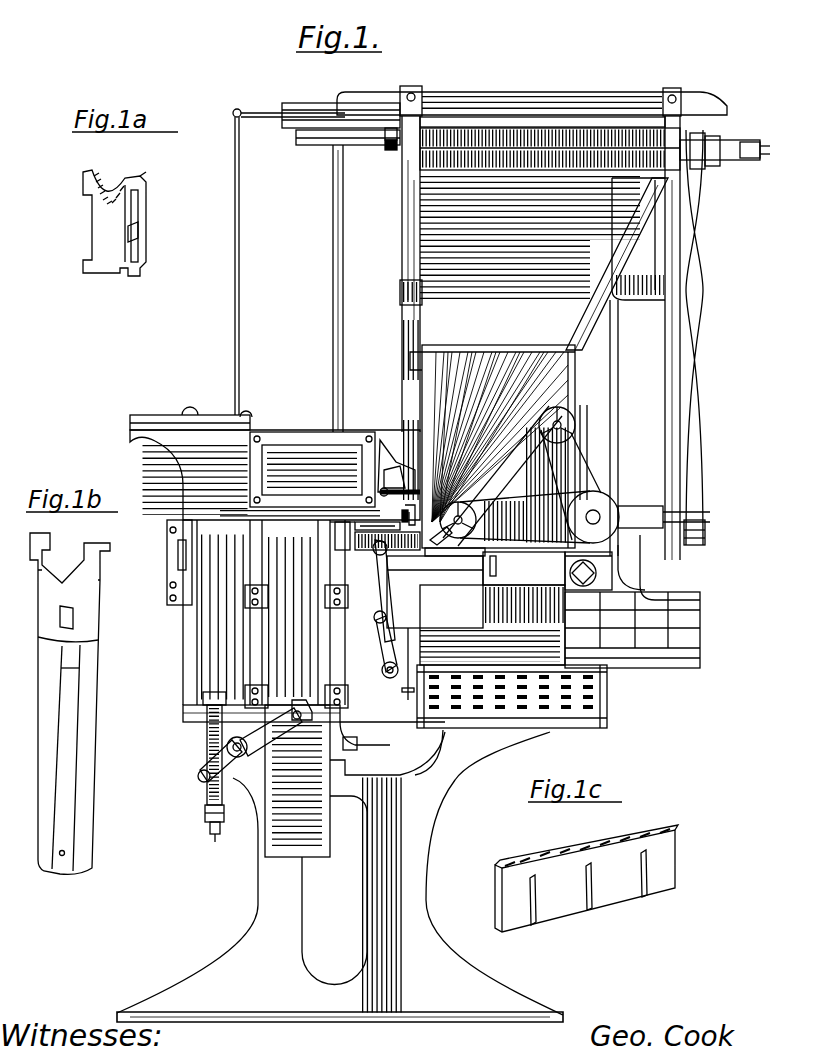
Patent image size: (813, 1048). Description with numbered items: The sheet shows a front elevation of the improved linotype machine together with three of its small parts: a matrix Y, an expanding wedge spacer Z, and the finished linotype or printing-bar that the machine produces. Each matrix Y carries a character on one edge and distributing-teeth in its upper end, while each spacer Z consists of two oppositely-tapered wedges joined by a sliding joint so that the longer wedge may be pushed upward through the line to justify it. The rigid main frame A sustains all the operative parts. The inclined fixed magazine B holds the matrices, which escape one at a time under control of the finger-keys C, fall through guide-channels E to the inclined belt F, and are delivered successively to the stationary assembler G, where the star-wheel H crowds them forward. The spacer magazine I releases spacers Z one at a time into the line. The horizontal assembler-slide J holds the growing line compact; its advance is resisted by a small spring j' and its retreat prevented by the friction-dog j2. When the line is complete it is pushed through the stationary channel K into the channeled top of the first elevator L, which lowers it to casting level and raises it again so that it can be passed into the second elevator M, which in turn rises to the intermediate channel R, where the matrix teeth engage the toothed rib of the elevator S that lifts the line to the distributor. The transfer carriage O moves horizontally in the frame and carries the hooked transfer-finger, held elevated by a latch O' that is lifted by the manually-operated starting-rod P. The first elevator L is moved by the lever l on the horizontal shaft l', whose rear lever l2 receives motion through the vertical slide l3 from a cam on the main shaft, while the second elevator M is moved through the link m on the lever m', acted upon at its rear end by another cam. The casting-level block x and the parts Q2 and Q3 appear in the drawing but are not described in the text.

In FIG. 1, the main frame A is at (172, 485).
In FIG. 1, the magazine B is at (572, 301).
In FIG. 1, the elevator S is at (310, 148).
In FIG. 1, the guide-channels E is at (430, 395).
In FIG. 1, the spacer magazine I is at (398, 450).
In FIG. 1, the intermediate channel R is at (312, 469).
In FIG. 1, the stationary channel K is at (335, 532).
In FIG. 1, the transfer carriage O is at (377, 510).
In FIG. 1, the latch O' is at (408, 507).
In FIG. 1, the assembler G is at (400, 552).
In FIG. 1, the star-wheel H is at (435, 548).
In FIG. 1, the inclined belt F is at (566, 455).
In FIG. 1, the spring j' is at (614, 452).
In FIG. 1, the friction-dog j2 is at (547, 568).
In FIG. 1, the assembler-slide J is at (577, 571).
In FIG. 1, the lever Q2 is at (372, 576).
In FIG. 1, the box Q3 is at (396, 606).
In FIG. 1, the starting-rod P is at (400, 680).
In FIG. 1, the finger-keys C is at (553, 696).
In FIG. 1, the second elevator M is at (225, 603).
In FIG. 1, the first elevator L is at (306, 611).
In FIG. 1, the block x is at (297, 781).
In FIG. 1, the lever l is at (276, 733).
In FIG. 1, the horizontal shaft l' is at (254, 759).
In FIG. 1, the lever l2 is at (206, 770).
In FIG. 1, the vertical slide l3 is at (200, 742).
In FIG. 1, the link m is at (192, 817).
In FIG. 1, the lever m' is at (221, 838).
In FIG. 1A, the matrix Y is at (80, 243).
In FIG. 1B, the expanding wedge spacer Z is at (72, 703).